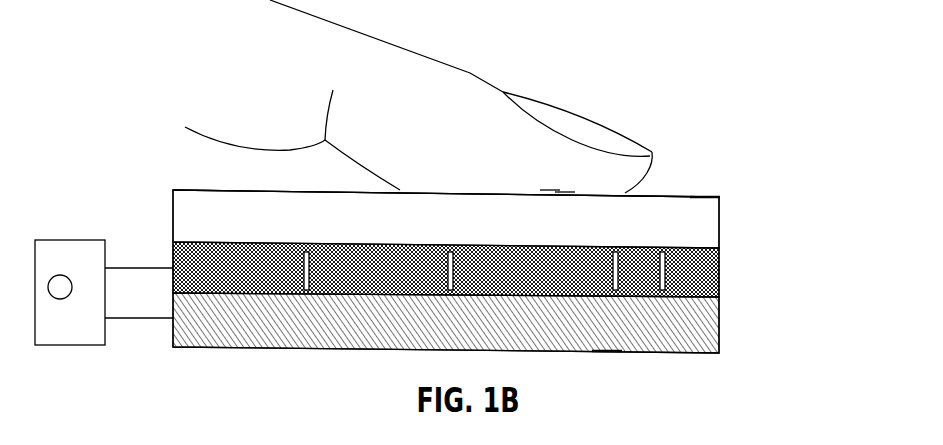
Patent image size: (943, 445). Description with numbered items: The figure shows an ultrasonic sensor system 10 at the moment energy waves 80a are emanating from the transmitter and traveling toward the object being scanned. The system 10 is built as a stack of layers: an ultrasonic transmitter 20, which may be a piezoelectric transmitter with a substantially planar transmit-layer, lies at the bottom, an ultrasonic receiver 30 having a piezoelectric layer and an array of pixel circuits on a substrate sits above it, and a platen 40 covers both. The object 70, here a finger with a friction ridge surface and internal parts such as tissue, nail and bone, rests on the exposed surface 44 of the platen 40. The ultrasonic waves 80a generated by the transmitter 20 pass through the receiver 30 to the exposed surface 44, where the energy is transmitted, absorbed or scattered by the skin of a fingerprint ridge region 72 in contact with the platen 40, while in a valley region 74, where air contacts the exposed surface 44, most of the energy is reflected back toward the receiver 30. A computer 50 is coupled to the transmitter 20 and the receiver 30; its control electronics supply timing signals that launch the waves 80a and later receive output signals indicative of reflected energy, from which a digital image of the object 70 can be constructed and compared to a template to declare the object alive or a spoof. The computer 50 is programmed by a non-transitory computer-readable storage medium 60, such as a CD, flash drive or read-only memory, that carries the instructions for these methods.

The ultrasonic sensor system 10 is at (728, 72).
The ultrasonic transmitter 20 is at (719, 335).
The ultrasonic receiver 30 is at (719, 285).
The platen 40 is at (719, 232).
The exposed surface 44 is at (700, 197).
The computer 50 is at (70, 240).
The computer-readable storage medium 60 is at (60, 299).
The object 70 is at (483, 79).
The fingerprint ridge region 72 is at (563, 193).
The valley region 74 is at (549, 188).
The ultrasonic waves 80a is at (669, 247).